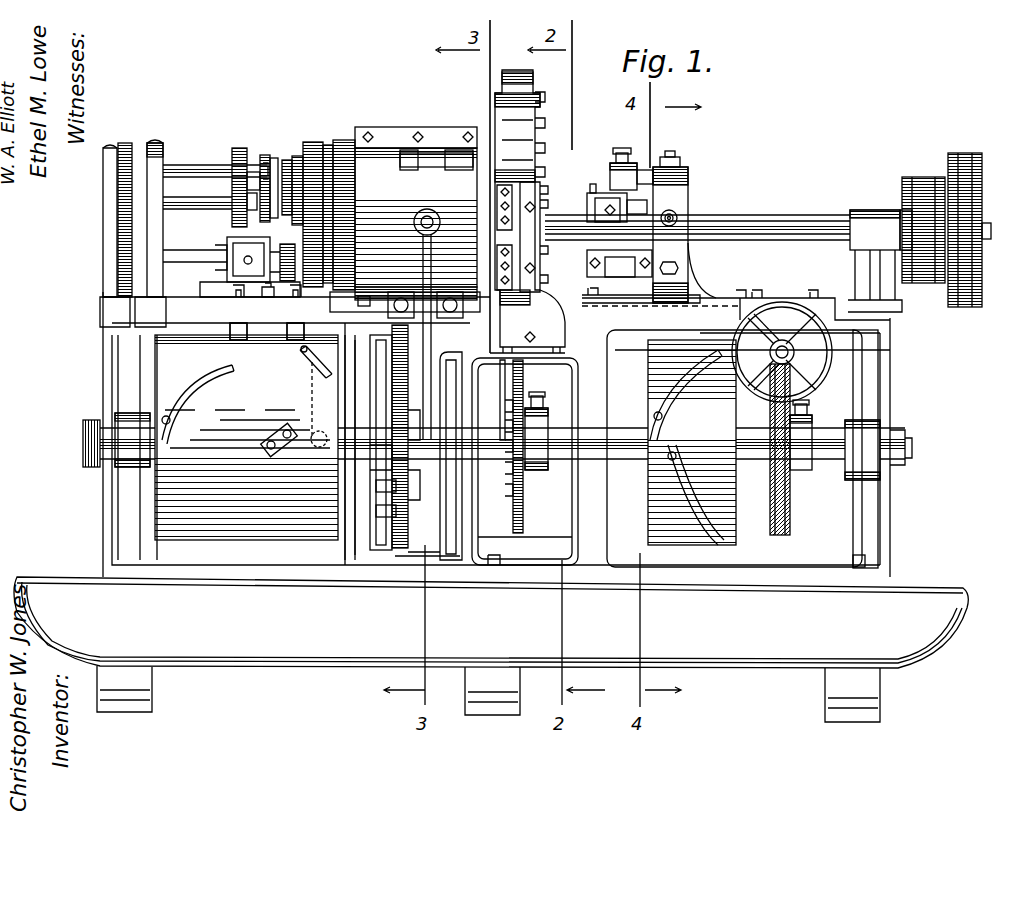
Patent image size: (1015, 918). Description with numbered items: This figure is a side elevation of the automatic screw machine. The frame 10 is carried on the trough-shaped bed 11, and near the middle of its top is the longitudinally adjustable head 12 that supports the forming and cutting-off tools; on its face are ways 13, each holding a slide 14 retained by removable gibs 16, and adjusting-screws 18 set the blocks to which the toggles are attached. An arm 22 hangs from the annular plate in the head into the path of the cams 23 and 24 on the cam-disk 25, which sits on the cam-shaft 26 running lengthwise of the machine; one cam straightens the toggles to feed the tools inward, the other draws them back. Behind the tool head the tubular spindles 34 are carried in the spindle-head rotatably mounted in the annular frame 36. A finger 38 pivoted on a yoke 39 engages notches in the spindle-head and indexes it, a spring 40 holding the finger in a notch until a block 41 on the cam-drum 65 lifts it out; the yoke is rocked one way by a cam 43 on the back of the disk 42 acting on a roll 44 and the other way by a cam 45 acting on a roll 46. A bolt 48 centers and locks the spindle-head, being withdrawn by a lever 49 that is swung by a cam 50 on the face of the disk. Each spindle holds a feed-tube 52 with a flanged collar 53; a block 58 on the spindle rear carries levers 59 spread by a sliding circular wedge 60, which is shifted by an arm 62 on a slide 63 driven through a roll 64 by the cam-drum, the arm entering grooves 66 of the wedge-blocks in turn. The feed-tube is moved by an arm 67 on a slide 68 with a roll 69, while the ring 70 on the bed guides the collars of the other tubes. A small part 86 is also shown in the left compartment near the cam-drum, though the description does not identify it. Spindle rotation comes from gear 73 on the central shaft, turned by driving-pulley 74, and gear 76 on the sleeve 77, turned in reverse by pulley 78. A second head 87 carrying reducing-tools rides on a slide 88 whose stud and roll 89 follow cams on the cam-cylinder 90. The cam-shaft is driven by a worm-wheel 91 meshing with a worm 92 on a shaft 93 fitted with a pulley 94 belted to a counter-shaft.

The frame 10 is at (103, 362).
The trough-shaped bed 11 is at (491, 649).
The head 12 is at (527, 211).
The ways 13 is at (530, 185).
The slide 14 is at (541, 208).
The gibs 16 is at (542, 197).
The adjusting-screw 18 is at (545, 220).
The arm 22 is at (500, 384).
The cam 23 is at (520, 398).
The cam 24 is at (505, 494).
The cam-disk 25 is at (526, 524).
The cam-shaft 26 is at (830, 470).
The tubular spindles 34 is at (298, 156).
The annular frame 36 is at (416, 207).
The finger 38 is at (378, 312).
The yoke 39 is at (372, 408).
The spring 40 is at (387, 442).
The block 41 is at (320, 378).
The disk 42 is at (398, 358).
The cam 43 is at (340, 494).
The roll 44 is at (340, 512).
The cam 45 is at (340, 452).
The roll 46 is at (372, 465).
The bolt 48 is at (432, 218).
The lever 49 is at (416, 270).
The cam 50 is at (428, 456).
The feed-tube 52 is at (205, 165).
The flanged collar 53 is at (227, 256).
The block 58 is at (240, 148).
The levers 59 is at (265, 155).
The circular wedge 60 is at (287, 160).
The arm 62 is at (268, 297).
The slide 63 is at (298, 297).
The roll 64 is at (293, 340).
The cam-drum 65 is at (201, 404).
The grooves 66 is at (287, 246).
The arm 67 is at (215, 280).
The slide 68 is at (236, 300).
The roll 69 is at (240, 340).
The ring 70 is at (147, 150).
The gear 73 is at (328, 145).
The driving-pulley 74 is at (966, 308).
The gear 76 is at (348, 140).
The sleeve 77 is at (798, 218).
The pulley 78 is at (924, 286).
The cam 86 is at (306, 412).
The head 87 is at (637, 225).
The slide 88 is at (705, 297).
The stud and roll 89 is at (752, 300).
The cam-cylinder 90 is at (692, 442).
The worm-wheel 91 is at (780, 535).
The worm 92 is at (812, 378).
The shaft 93 is at (783, 340).
The pulley 94 is at (890, 352).